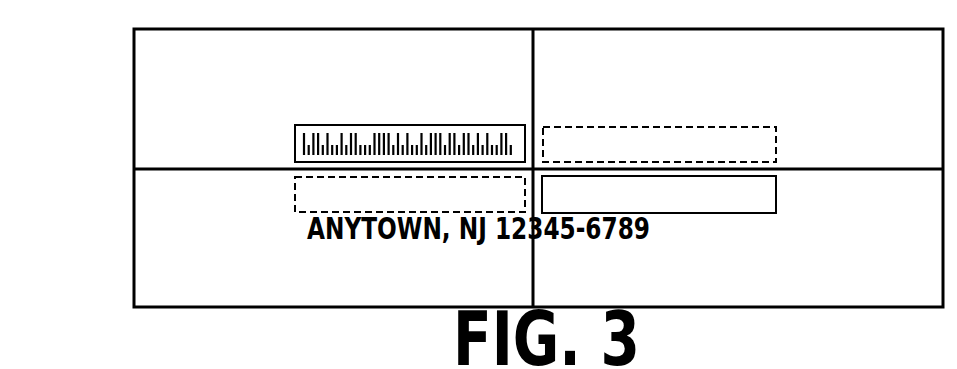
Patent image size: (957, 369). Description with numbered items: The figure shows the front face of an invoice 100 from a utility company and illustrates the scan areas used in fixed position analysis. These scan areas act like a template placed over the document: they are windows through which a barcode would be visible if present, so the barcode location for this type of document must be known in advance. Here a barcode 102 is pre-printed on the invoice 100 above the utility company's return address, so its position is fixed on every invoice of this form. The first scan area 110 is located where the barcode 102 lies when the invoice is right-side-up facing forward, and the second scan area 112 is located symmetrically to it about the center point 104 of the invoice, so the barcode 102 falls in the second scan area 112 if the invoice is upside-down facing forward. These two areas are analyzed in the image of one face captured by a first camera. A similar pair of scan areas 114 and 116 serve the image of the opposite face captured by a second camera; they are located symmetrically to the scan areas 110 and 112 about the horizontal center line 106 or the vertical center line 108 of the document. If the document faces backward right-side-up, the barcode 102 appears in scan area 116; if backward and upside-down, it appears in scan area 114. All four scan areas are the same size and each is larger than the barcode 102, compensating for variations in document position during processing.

The invoice 100 is at (153, 96).
The barcode 102 is at (407, 128).
The center point 104 is at (533, 165).
The horizontal center line 106 is at (832, 168).
The vertical center line 108 is at (535, 249).
The first scan area 110 is at (338, 124).
The second scan area 112 is at (725, 213).
The scan area 114 is at (295, 200).
The scan area 116 is at (776, 130).